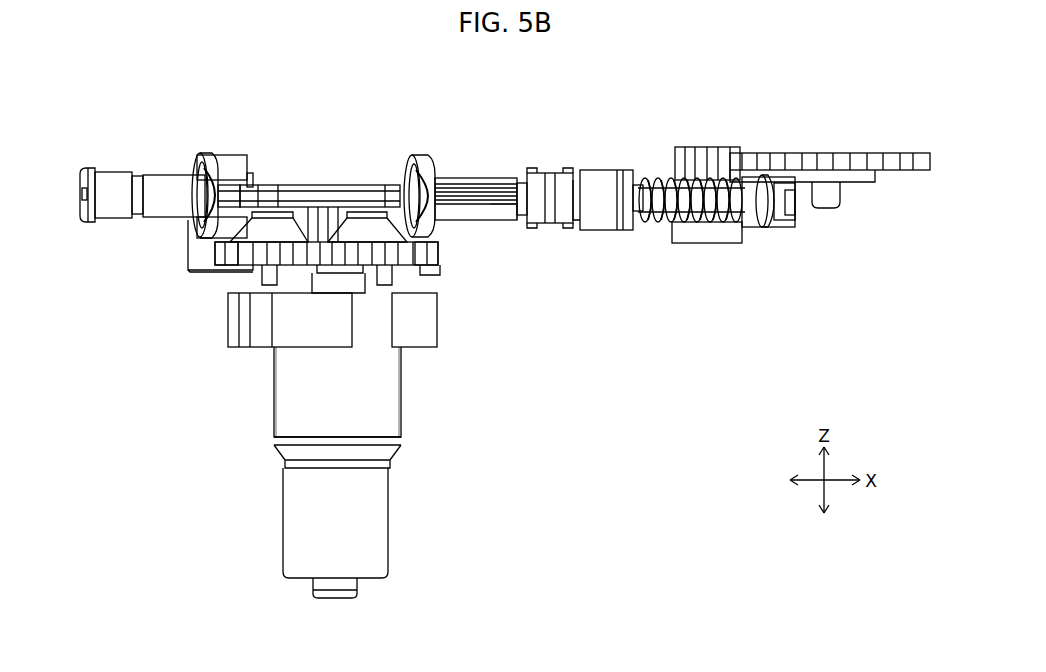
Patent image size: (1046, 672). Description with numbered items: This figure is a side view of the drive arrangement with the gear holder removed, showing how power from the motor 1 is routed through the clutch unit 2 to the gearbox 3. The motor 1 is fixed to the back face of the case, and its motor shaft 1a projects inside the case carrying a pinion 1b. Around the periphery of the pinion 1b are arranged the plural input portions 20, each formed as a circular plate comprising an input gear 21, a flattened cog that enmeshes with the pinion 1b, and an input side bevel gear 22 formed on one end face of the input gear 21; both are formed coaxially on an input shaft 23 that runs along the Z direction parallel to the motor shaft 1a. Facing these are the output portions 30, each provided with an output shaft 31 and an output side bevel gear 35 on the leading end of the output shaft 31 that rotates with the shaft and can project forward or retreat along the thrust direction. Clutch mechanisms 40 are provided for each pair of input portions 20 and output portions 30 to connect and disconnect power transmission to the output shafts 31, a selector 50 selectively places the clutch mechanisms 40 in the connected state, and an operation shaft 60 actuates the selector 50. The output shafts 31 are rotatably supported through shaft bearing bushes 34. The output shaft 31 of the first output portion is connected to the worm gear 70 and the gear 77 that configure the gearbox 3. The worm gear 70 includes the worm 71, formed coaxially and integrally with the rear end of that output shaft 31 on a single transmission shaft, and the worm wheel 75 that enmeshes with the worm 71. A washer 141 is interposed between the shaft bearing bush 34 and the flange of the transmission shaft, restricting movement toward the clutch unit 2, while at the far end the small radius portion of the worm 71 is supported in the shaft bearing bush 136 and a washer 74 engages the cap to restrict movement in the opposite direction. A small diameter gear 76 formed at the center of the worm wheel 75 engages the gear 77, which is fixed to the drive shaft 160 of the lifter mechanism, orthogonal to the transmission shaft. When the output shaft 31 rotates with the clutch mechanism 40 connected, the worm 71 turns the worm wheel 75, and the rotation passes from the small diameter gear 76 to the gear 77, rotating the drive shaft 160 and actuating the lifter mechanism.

The motor 1 is at (401, 402).
The motor shaft 1a is at (345, 240).
The pinion 1b is at (325, 240).
The clutch unit 2 is at (322, 206).
The gearbox 3 is at (784, 181).
The input portion 20 is at (215, 250).
The input gear 21 is at (243, 250).
The input side bevel gear 22 is at (288, 225).
The input shaft 23 is at (270, 292).
The output portion 30 is at (356, 195).
The output shaft 31 is at (553, 218).
The shaft bearing bush 34 is at (118, 215).
The output side bevel gear 35 is at (170, 215).
The clutch mechanism 40 is at (205, 282).
The selector 50 is at (380, 188).
The operation shaft 60 is at (235, 155).
The worm gear 70 is at (781, 210).
The worm 71 is at (712, 230).
The washer 74 is at (757, 175).
The worm wheel 75 is at (655, 222).
The small diameter gear 76 is at (672, 160).
The gear 77 is at (847, 162).
The shaft bearing bush 136 is at (800, 224).
The washer 141 is at (617, 228).
The drive shaft 160 is at (842, 195).